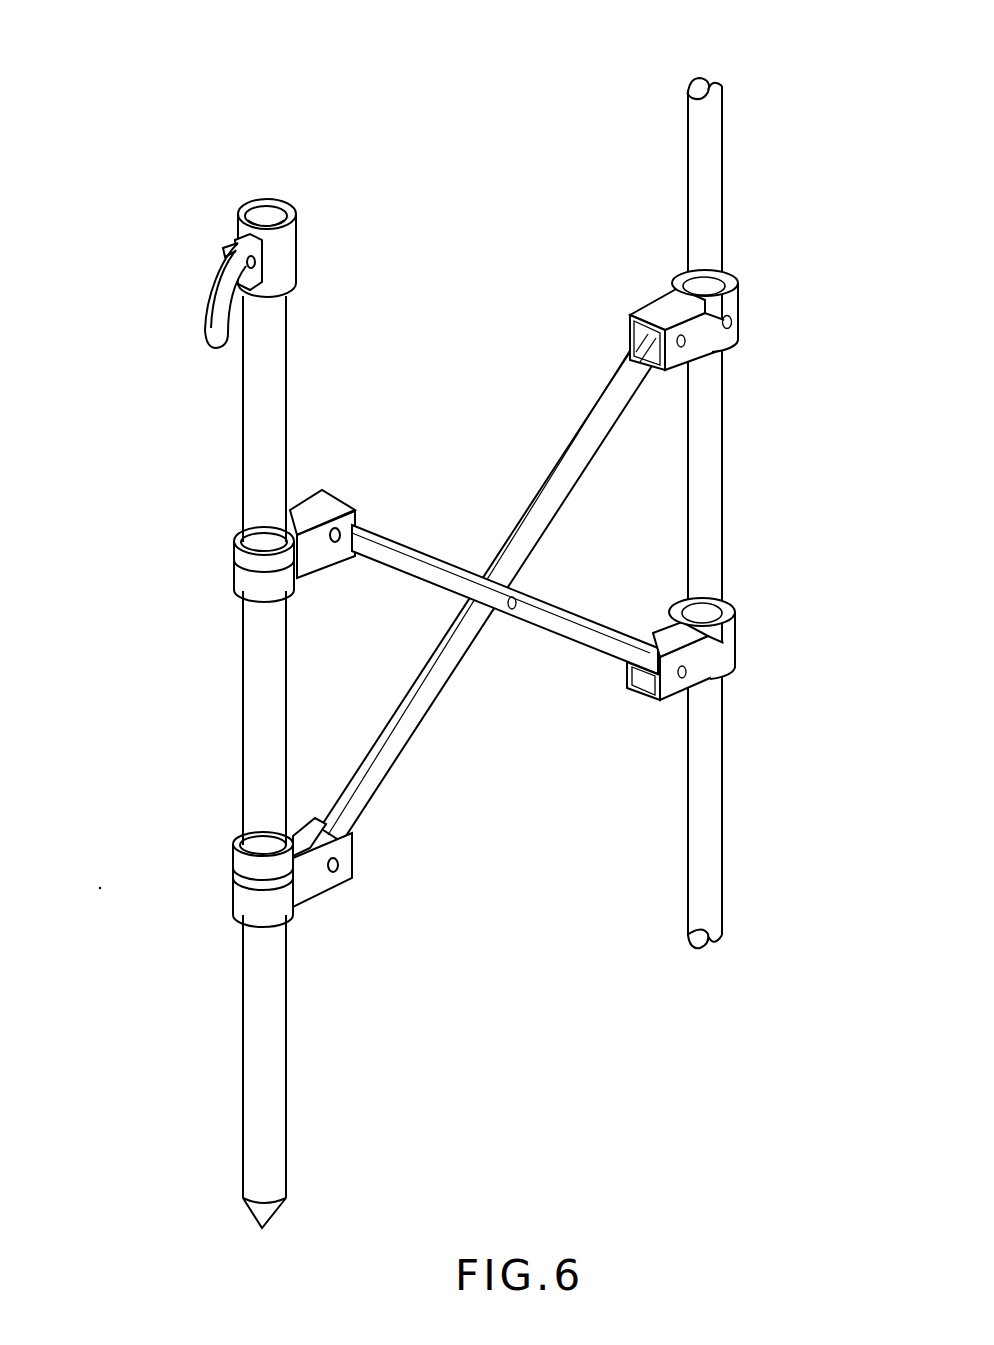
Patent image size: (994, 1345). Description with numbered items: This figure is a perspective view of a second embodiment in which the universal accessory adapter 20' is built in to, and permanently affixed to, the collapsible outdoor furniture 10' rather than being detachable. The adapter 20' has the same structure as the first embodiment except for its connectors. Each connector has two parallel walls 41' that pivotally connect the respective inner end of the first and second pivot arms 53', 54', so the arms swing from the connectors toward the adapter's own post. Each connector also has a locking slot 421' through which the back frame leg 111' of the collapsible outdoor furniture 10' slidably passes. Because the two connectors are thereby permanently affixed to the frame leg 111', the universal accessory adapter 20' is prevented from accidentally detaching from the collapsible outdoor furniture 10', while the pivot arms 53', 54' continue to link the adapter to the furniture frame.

The collapsible outdoor furniture 10' is at (785, 477).
The back frame leg 111' is at (766, 163).
The universal accessory adapter 20' is at (178, 713).
The parallel walls 41' is at (632, 455).
The locking slot 421' is at (785, 438).
The first pivot arm 53' is at (490, 590).
The second pivot arm 54' is at (505, 633).